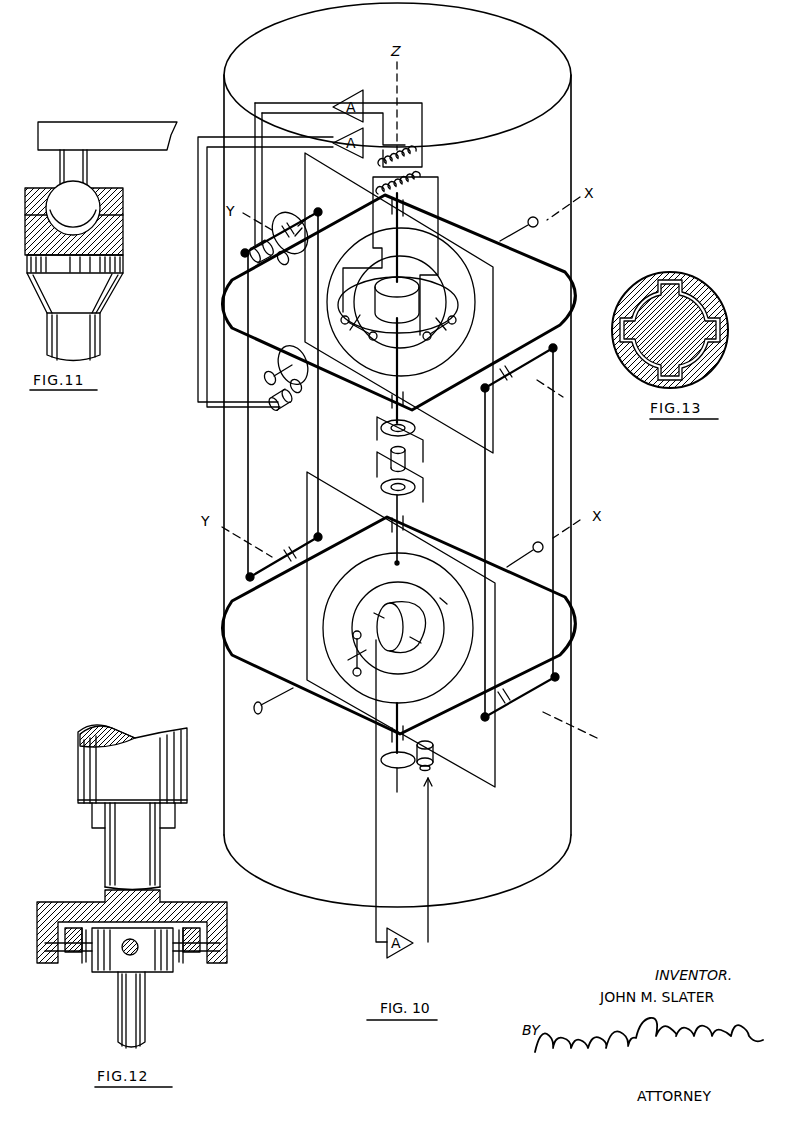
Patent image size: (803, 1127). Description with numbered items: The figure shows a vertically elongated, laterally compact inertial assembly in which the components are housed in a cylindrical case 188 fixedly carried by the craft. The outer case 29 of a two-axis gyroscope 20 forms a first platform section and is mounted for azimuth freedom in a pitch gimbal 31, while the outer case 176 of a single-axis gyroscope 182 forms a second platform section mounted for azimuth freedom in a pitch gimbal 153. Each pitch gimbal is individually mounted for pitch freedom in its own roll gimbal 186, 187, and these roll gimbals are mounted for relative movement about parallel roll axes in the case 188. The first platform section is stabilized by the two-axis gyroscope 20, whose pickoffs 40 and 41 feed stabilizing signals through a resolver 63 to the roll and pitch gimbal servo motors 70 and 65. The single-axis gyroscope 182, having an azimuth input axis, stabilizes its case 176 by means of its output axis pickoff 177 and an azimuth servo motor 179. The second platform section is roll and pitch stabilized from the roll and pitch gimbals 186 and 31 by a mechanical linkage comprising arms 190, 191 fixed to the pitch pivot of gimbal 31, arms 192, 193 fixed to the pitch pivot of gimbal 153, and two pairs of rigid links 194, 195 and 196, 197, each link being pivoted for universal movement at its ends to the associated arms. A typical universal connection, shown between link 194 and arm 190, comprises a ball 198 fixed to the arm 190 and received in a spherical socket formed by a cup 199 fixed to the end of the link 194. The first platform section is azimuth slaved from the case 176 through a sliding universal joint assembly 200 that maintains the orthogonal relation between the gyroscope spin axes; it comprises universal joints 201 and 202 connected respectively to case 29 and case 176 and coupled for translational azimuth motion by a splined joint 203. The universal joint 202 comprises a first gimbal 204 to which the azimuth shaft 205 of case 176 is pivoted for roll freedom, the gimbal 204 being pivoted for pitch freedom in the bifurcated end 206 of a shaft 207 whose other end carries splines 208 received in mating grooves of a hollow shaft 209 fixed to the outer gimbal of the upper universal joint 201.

In FIG. 10, the two-axis gyroscope 20 is at (410, 364).
In FIG. 10, the outer case 29 is at (471, 322).
In FIG. 10, the pitch gimbal 31 is at (508, 312).
In FIG. 10, the pickoff 40 is at (437, 343).
In FIG. 10, the pickoff 41 is at (359, 338).
In FIG. 10, the resolver 63 is at (442, 164).
In FIG. 10, the pitch gimbal servo motor 65 is at (270, 260).
In FIG. 10, the roll gimbal servo motor 70 is at (282, 410).
In FIG. 10, the pitch gimbal 153 is at (512, 758).
In FIG. 10, the outer case 176 is at (349, 575).
In FIG. 10, the output axis pickoff 177 is at (353, 636).
In FIG. 10, the azimuth servo motor 179 is at (434, 745).
In FIG. 10, the single-axis gyroscope 182 is at (430, 678).
In FIG. 10, the roll gimbal 186 is at (546, 261).
In FIG. 10, the roll gimbal 187 is at (313, 701).
In FIG. 10, the case 188 is at (572, 160).
In FIG. 10, the arm 190 is at (513, 375).
In FIG. 11, the arm 190 is at (113, 130).
In FIG. 10, the arm 191 is at (273, 240).
In FIG. 10, the arm 192 is at (527, 692).
In FIG. 10, the arm 193 is at (280, 556).
In FIG. 10, the rigid link 194 is at (552, 442).
In FIG. 11, the rigid link 194 is at (62, 328).
In FIG. 10, the rigid link 195 is at (488, 500).
In FIG. 10, the rigid link 196 is at (249, 490).
In FIG. 10, the rigid link 197 is at (319, 517).
In FIG. 11, the ball 198 is at (80, 198).
In FIG. 11, the cup 199 is at (110, 228).
In FIG. 10, the sliding universal joint assembly 200 is at (420, 470).
In FIG. 10, the universal joint 201 is at (427, 433).
In FIG. 10, the universal joint 202 is at (377, 482).
In FIG. 12, the universal joint 202 is at (150, 975).
In FIG. 10, the splined joint 203 is at (376, 454).
In FIG. 10, the first gimbal 204 is at (420, 491).
In FIG. 12, the first gimbal 204 is at (73, 963).
In FIG. 12, the azimuth shaft 205 is at (118, 1020).
In FIG. 12, the bifurcated end 206 is at (85, 893).
In FIG. 12, the shaft 207 is at (127, 852).
In FIG. 12, the splines 208 is at (96, 820).
In FIG. 13, the splines 208 is at (710, 322).
In FIG. 12, the hollow shaft 209 is at (107, 768).
In FIG. 13, the hollow shaft 209 is at (728, 350).